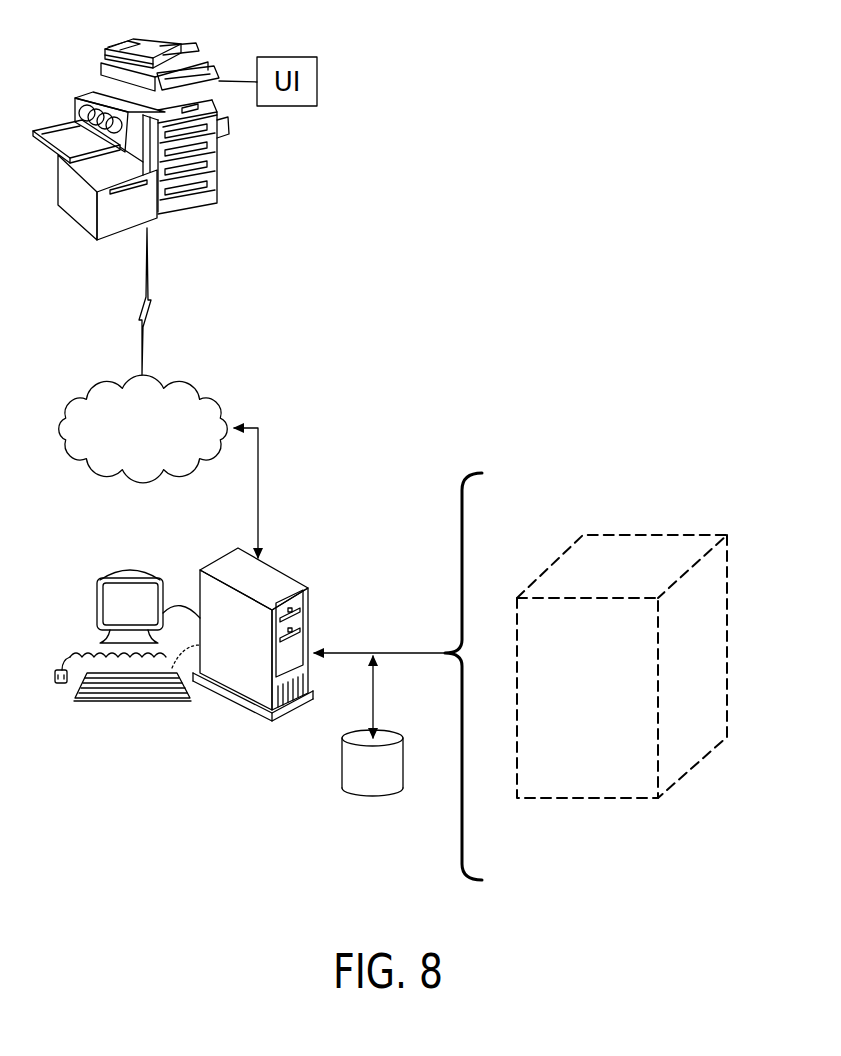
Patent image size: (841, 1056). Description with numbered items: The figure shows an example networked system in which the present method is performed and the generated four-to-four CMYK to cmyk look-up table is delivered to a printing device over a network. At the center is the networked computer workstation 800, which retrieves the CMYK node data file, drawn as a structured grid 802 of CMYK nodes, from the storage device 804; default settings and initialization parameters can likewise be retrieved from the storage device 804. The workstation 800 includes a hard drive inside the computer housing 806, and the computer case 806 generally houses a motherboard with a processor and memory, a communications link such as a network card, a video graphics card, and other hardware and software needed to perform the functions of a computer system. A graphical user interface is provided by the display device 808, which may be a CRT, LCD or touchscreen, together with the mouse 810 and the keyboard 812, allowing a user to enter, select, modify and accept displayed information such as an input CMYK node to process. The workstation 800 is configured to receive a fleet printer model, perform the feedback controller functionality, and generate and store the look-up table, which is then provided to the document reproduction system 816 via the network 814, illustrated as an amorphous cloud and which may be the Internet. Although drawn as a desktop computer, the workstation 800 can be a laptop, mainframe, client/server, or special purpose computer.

The networked computer workstation 800 is at (320, 553).
The structured grid of CMYK nodes 802 is at (647, 533).
The storage device 804 is at (342, 765).
The computer housing 806 is at (228, 562).
The display device 808 is at (132, 573).
The mouse 810 is at (60, 684).
The keyboard 812 is at (128, 698).
The network 814 is at (203, 392).
The document reproduction system 816 is at (80, 85).